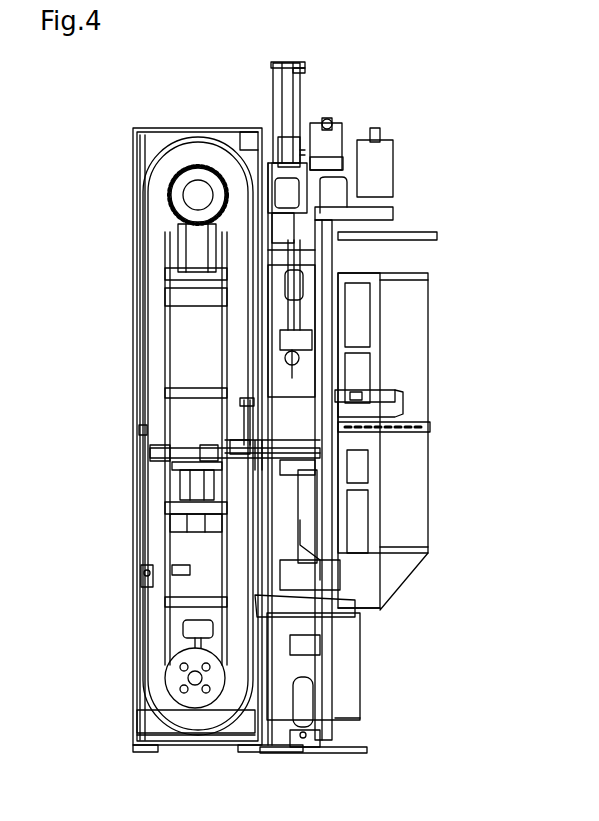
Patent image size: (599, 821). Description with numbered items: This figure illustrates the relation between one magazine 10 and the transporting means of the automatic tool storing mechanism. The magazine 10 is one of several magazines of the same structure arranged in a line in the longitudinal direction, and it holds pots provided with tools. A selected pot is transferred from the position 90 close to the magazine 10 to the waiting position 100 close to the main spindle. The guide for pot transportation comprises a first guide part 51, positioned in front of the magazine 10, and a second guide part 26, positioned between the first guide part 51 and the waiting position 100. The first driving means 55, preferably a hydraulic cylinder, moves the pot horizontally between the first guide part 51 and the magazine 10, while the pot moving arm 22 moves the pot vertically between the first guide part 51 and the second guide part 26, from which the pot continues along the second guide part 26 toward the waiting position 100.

The magazine 10 is at (135, 196).
The first guide part 51 is at (243, 435).
The position close to the magazine 90 is at (222, 440).
The first driving means 55 is at (190, 465).
The pot moving arm 22 is at (307, 323).
The second guide part 26 is at (395, 393).
The waiting position 100 is at (403, 428).